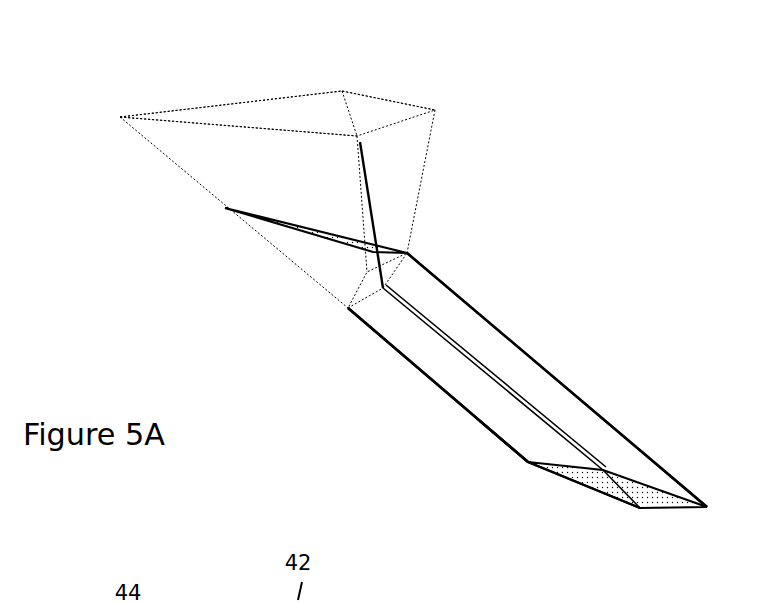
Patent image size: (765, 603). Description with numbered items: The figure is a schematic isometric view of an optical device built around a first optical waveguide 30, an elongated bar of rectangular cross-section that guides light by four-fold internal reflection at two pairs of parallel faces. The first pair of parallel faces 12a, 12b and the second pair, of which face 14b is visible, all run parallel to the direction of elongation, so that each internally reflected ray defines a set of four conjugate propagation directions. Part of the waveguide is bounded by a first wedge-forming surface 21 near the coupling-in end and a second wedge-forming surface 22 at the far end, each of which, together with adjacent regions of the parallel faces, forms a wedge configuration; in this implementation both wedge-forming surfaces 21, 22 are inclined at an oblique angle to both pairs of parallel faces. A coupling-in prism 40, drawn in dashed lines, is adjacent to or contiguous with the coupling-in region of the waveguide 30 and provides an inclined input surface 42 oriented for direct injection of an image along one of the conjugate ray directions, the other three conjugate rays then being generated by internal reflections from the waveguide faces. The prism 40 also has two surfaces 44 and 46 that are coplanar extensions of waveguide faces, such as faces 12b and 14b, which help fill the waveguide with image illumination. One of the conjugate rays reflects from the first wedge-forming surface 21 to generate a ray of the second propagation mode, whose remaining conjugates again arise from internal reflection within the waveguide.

The coupling-in prism 40 is at (163, 180).
The inclined input surface 42 is at (325, 107).
The extension surface 44 is at (198, 106).
The extension surface 46 is at (173, 151).
The first wedge-forming surface 21 is at (295, 229).
The first optical waveguide 30 is at (510, 307).
The first parallel face 12a is at (565, 415).
The first parallel face 12b is at (513, 452).
The second parallel face 14b is at (427, 360).
The second wedge-forming surface 22 is at (593, 483).